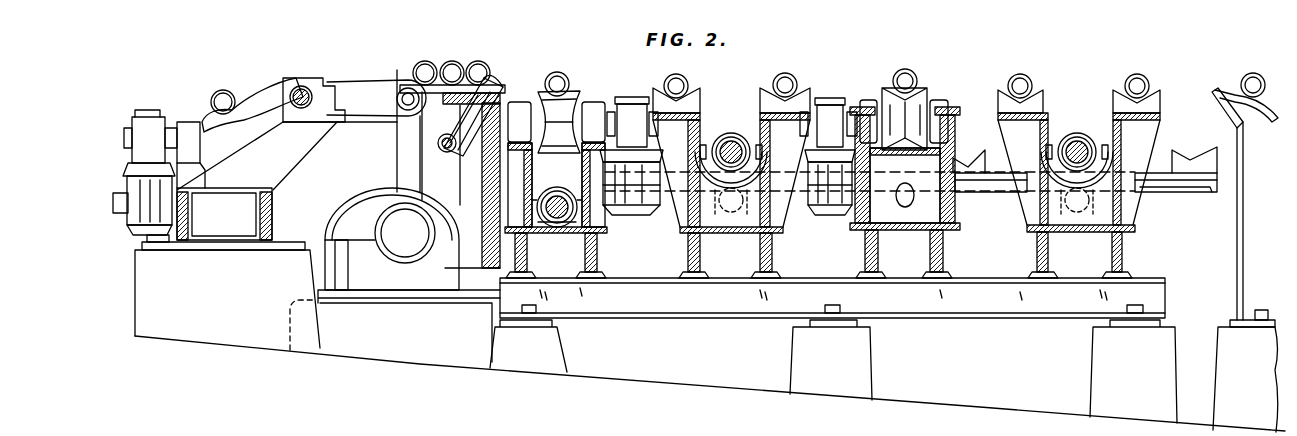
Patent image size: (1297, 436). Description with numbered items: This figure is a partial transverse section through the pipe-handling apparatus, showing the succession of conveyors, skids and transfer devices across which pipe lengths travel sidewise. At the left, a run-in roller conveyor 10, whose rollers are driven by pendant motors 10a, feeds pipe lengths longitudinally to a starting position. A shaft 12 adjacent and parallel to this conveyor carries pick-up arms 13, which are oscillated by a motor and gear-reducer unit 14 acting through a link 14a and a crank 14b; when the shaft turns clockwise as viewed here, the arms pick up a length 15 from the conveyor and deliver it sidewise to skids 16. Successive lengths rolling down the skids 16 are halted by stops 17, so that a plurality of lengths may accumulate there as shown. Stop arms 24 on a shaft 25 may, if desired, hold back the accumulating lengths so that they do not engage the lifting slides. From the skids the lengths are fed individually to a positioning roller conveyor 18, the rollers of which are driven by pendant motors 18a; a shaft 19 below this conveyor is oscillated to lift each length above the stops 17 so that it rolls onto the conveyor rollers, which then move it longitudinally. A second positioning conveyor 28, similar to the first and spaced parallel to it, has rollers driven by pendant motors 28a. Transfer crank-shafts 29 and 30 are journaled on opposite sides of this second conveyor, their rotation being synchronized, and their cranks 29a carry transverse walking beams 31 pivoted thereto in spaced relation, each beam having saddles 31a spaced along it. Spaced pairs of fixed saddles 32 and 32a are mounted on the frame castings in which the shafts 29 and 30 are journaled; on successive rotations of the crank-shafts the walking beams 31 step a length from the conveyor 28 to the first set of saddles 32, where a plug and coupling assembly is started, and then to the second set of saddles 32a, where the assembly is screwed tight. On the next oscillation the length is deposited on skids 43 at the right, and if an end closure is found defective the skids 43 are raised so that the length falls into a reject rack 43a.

The run-in roller conveyor 10 is at (210, 134).
The pendant motors 10a is at (134, 212).
The shaft 12 is at (306, 89).
The pick-up arms 13 is at (262, 96).
The motor and gear-reducer unit 14 is at (358, 197).
The link 14a is at (404, 147).
The crank 14b is at (358, 110).
The length 15 is at (226, 91).
The skids 16 is at (397, 75).
The stops 17 is at (502, 79).
The positioning roller conveyor 18 is at (575, 89).
The pendant motors 18a is at (635, 217).
The shaft 19 is at (559, 226).
The stop arms 24 is at (473, 108).
The shaft 25 is at (447, 152).
The second positioning conveyor 28 is at (912, 92).
The pendant motors 28a is at (817, 205).
The transfer crank-shaft 29 is at (733, 137).
The cranks 29a is at (757, 223).
The transfer crank-shaft 30 is at (1078, 139).
The walking beams 31 is at (997, 192).
The saddles 31a is at (972, 150).
The fixed saddles 32 is at (694, 95).
The fixed saddles 32a is at (1040, 97).
The skids 43 is at (1270, 115).
The reject rack 43a is at (1243, 252).